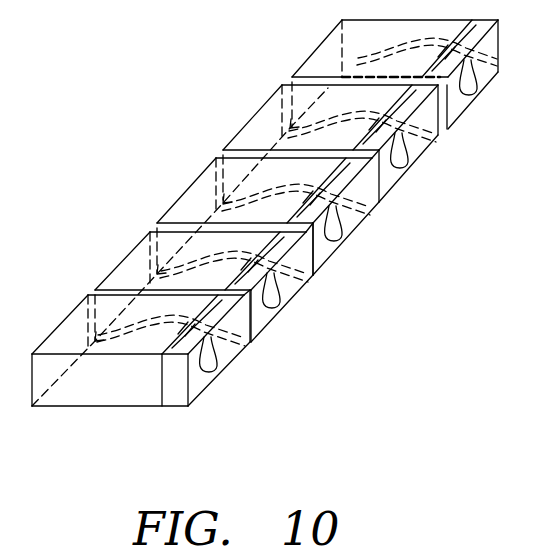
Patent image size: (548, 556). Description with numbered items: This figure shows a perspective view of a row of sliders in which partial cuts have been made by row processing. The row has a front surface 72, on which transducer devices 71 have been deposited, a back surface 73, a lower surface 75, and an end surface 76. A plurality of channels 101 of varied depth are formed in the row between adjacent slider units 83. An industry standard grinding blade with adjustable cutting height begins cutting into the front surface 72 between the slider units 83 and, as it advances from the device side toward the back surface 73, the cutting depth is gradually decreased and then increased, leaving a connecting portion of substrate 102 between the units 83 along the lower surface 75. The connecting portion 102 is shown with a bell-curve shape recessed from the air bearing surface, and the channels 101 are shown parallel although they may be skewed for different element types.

The transducer device 71 is at (341, 230).
The front surface 72 is at (430, 111).
The back surface 73 is at (112, 276).
The lower surface 75 is at (143, 392).
The end surface 76 is at (106, 393).
The slider unit 83 is at (201, 156).
The channel 101 is at (374, 150).
The connecting portion of substrate 102 is at (321, 184).